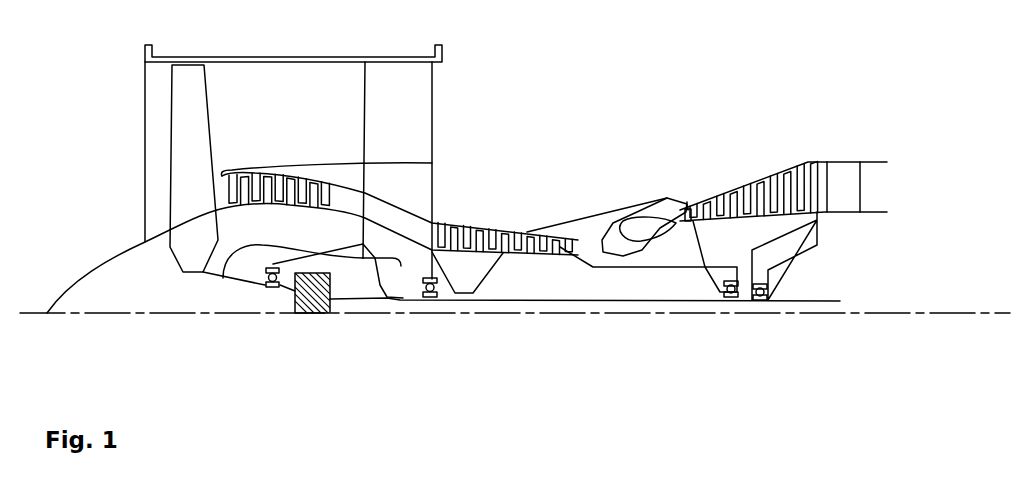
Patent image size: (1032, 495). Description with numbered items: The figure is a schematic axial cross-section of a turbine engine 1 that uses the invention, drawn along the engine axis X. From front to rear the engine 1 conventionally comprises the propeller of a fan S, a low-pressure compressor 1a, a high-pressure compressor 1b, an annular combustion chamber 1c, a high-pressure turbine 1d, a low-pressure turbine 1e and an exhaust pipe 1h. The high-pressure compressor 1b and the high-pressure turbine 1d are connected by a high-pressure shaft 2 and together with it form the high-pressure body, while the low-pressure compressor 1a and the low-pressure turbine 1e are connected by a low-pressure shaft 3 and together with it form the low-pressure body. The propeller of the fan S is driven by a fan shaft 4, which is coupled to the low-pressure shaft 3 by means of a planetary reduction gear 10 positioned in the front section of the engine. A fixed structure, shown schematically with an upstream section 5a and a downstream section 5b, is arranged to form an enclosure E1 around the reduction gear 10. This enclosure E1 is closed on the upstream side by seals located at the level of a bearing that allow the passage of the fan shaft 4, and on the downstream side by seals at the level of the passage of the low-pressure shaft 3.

The turbine engine 1 is at (553, 133).
The low-pressure compressor 1a is at (246, 177).
The high-pressure compressor 1b is at (467, 231).
The annular combustion chamber 1c is at (638, 230).
The high-pressure turbine 1d is at (690, 209).
The low-pressure turbine 1e is at (813, 182).
The exhaust pipe 1h is at (870, 182).
The high-pressure shaft 2 is at (632, 267).
The low-pressure shaft 3 is at (537, 302).
The fan shaft 4 is at (250, 288).
The upstream section 5a is at (225, 268).
The downstream section 5b is at (401, 266).
The planetary reduction gear 10 is at (307, 288).
The enclosure E1 is at (343, 262).
The fan S is at (184, 118).
The engine axis X is at (38, 313).